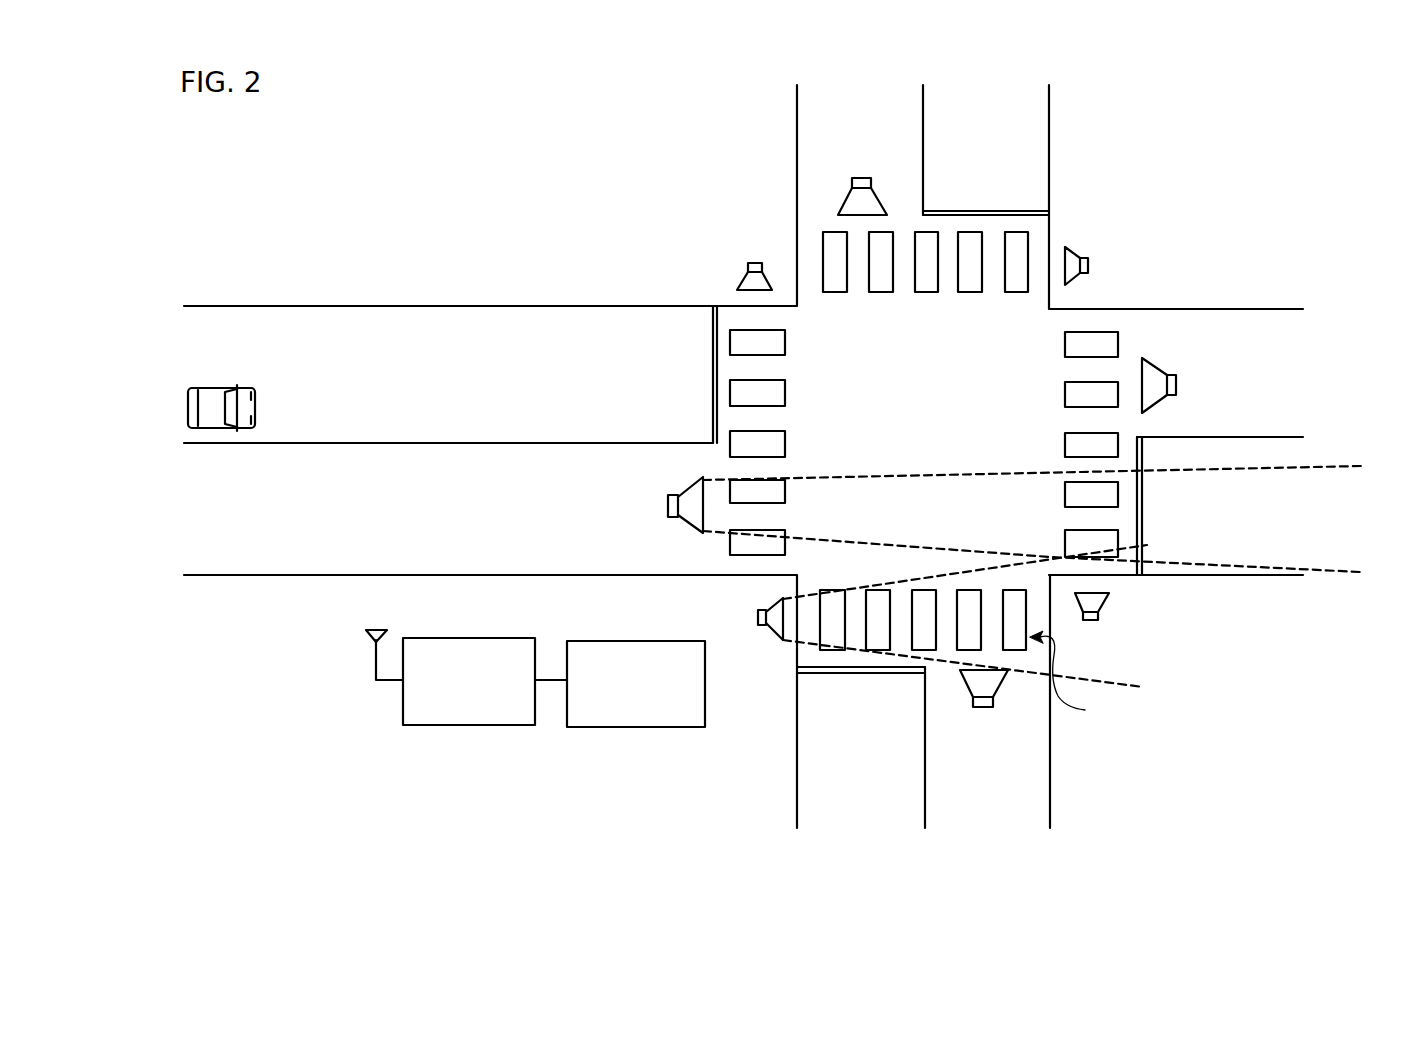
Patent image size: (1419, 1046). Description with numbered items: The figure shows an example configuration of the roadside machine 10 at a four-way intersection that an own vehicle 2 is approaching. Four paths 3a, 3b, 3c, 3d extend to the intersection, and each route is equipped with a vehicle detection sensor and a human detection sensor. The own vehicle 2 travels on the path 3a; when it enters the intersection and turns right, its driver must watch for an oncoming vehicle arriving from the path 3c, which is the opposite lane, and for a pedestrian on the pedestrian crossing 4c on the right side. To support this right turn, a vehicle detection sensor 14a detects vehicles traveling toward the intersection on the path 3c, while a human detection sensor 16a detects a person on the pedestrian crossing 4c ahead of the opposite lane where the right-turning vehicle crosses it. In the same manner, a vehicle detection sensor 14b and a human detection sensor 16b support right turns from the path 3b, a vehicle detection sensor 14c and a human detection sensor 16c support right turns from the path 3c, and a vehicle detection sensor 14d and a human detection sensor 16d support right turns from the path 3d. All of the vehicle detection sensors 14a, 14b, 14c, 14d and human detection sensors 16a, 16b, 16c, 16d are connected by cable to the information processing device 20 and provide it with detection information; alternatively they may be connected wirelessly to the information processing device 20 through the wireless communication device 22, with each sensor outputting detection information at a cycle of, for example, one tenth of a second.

The own vehicle 2 is at (225, 388).
The path 3a is at (562, 340).
The path 3b is at (818, 755).
The path 3c is at (1200, 548).
The path 3d is at (1032, 158).
The pedestrian crossing 4c is at (1072, 677).
The roadside machine 10 is at (770, 861).
The vehicle detection sensor 14a is at (668, 517).
The vehicle detection sensor 14b is at (983, 707).
The vehicle detection sensor 14c is at (1170, 375).
The vehicle detection sensor 14d is at (864, 178).
The human detection sensor 16a is at (758, 625).
The human detection sensor 16b is at (1092, 620).
The human detection sensor 16c is at (1086, 258).
The human detection sensor 16d is at (755, 263).
The information processing device 20 is at (638, 727).
The wireless communication device 22 is at (465, 725).